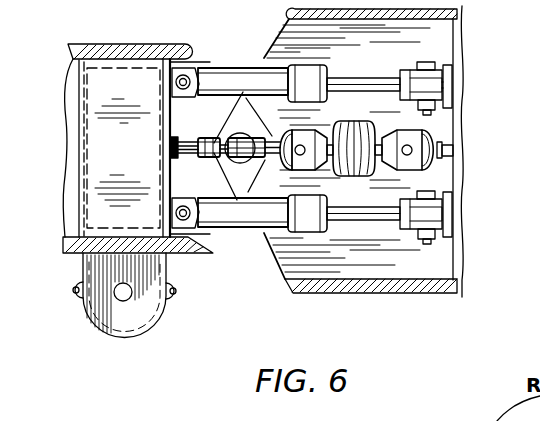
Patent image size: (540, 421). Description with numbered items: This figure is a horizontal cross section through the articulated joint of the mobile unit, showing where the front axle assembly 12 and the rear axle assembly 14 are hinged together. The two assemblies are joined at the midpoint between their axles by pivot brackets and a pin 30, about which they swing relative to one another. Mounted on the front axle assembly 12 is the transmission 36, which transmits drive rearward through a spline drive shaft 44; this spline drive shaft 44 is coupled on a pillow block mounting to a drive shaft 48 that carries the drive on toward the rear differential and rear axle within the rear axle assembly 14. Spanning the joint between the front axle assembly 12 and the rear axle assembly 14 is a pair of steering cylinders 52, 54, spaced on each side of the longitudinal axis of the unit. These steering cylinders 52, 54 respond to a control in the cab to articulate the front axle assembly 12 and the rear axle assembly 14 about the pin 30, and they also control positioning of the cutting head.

The front axle assembly 12 is at (73, 154).
The rear axle assembly 14 is at (463, 151).
The pivot pin 30 is at (233, 165).
The transmission 36 is at (128, 80).
The spline drive shaft 44 is at (262, 120).
The drive shaft 48 is at (430, 170).
The steering cylinder 52 is at (236, 80).
The steering cylinder 54 is at (240, 233).